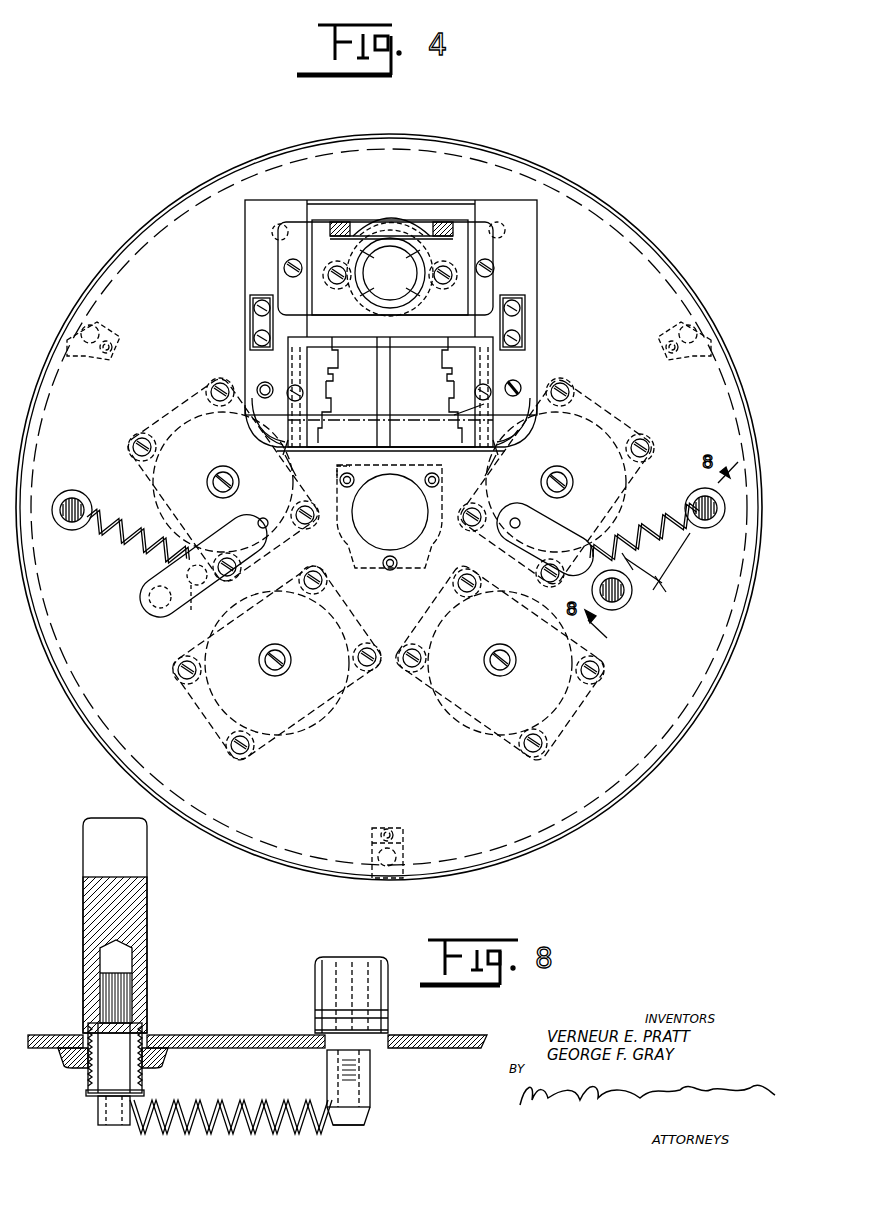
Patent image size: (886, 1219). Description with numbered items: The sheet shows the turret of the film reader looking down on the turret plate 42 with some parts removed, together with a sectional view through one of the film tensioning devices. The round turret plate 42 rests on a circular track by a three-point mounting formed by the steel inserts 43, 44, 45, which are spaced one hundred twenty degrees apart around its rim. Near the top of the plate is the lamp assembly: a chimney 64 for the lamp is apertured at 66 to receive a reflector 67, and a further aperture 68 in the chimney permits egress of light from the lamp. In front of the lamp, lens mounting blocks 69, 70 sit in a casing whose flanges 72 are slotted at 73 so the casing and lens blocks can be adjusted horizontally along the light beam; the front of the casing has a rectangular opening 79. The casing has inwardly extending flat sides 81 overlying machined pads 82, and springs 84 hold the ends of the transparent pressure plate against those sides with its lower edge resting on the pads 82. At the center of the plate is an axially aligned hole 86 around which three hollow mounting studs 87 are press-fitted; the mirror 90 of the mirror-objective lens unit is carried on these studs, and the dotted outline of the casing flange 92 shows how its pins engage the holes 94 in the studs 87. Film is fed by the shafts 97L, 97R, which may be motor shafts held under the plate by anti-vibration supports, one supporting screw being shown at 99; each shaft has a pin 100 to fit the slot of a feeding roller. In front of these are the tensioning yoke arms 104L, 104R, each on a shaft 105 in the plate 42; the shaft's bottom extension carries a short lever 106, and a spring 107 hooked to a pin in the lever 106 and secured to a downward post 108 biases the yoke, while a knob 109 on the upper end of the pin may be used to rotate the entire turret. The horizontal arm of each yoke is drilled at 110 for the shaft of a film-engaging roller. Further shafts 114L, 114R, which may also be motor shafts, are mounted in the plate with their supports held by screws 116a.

In FIG. 4, the turret plate 42 is at (525, 175).
In FIG. 8, the turret plate 42 is at (226, 1035).
In FIG. 4, the steel insert 43 is at (403, 852).
In FIG. 4, the steel insert 44 is at (75, 325).
In FIG. 4, the steel insert 45 is at (700, 330).
In FIG. 4, the chimney 64 is at (331, 222).
In FIG. 4, the chimney aperture 66 is at (358, 226).
In FIG. 4, the reflector 67 is at (388, 215).
In FIG. 4, the chimney aperture 68 is at (385, 314).
In FIG. 4, the lens mounting block 69 is at (450, 402).
In FIG. 4, the lens mounting block 70 is at (320, 404).
In FIG. 4, the flange 72 is at (299, 378).
In FIG. 4, the slot 73 is at (470, 407).
In FIG. 4, the rectangular opening 79 is at (400, 448).
In FIG. 4, the inwardly extending side 81 is at (390, 456).
In FIG. 4, the pad 82 is at (380, 471).
In FIG. 4, the spring 84 is at (292, 452).
In FIG. 4, the axially aligned hole 86 is at (412, 524).
In FIG. 4, the hollow mounting stud 87 is at (352, 462).
In FIG. 4, the mirror 90 is at (383, 384).
In FIG. 4, the flange 92 is at (468, 358).
In FIG. 4, the hole 94 is at (353, 486).
In FIG. 4, the shaft 97L is at (228, 474).
In FIG. 4, the shaft 97R is at (572, 481).
In FIG. 4, the supporting screw 99 is at (130, 447).
In FIG. 4, the pin 100 is at (212, 476).
In FIG. 4, the yoke arm 104L is at (236, 530).
In FIG. 4, the yoke arm 104R is at (545, 530).
In FIG. 8, the yoke arm 104R is at (140, 905).
In FIG. 4, the shaft 105 is at (612, 598).
In FIG. 8, the shaft 105 is at (122, 1068).
In FIG. 4, the short lever 106 is at (191, 595).
In FIG. 8, the short lever 106 is at (114, 1120).
In FIG. 8, the spring 107 is at (238, 1103).
In FIG. 8, the post 108 is at (366, 1093).
In FIG. 4, the knob 109 is at (72, 528).
In FIG. 8, the knob 109 is at (322, 970).
In FIG. 4, the drilled hole 110 is at (516, 518).
In FIG. 4, the shaft 114L is at (290, 663).
In FIG. 4, the shaft 114R is at (512, 656).
In FIG. 4, the screw 116a is at (175, 667).